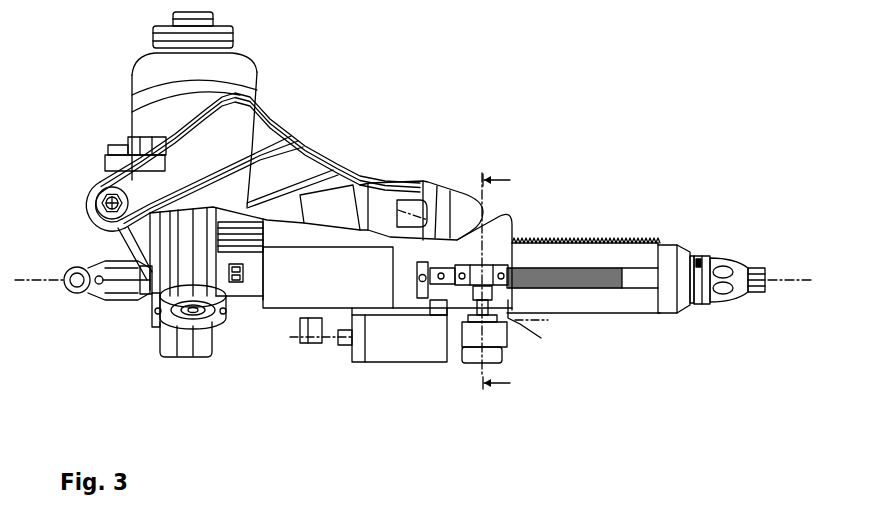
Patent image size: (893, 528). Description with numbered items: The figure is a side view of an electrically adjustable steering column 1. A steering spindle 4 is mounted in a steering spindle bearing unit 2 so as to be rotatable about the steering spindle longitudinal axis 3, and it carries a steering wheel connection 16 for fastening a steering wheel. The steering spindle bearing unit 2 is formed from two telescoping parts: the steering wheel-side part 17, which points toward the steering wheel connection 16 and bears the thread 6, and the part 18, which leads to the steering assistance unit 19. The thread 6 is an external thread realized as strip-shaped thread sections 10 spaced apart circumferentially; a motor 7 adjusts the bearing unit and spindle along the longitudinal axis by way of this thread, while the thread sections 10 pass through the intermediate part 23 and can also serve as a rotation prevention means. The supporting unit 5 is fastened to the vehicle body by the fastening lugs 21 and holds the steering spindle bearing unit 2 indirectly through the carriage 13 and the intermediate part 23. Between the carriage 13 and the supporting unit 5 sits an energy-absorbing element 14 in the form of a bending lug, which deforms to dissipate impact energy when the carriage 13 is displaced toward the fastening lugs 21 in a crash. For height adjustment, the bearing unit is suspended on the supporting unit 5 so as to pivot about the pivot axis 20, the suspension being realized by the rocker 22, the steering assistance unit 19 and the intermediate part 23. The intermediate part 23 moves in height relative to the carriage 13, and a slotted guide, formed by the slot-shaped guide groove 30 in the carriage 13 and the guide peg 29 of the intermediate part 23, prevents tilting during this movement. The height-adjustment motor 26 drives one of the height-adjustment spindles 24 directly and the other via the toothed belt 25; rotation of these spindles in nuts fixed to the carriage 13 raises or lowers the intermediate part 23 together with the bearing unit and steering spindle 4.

The steering column 1 is at (396, 96).
The steering spindle bearing unit 2 is at (640, 256).
The steering spindle longitudinal axis 3 is at (27, 284).
The steering spindle 4 is at (697, 293).
The supporting unit 5 is at (245, 145).
The thread 6 is at (580, 238).
The motor 7 is at (417, 354).
The thread sections 10 is at (582, 288).
The carriage 13 is at (498, 232).
The energy-absorbing element 14 is at (391, 180).
The steering wheel connection 16 is at (750, 294).
The steering wheel-side part 17 is at (630, 305).
The part of the steering spindle bearing unit 18 is at (297, 292).
The steering assistance unit 19 is at (185, 348).
The pivot axis 20 is at (90, 190).
The fastening lugs 21 is at (218, 95).
The rocker 22 is at (122, 245).
The intermediate part 23 is at (543, 338).
The height-adjustment spindles 24 is at (484, 308).
The toothed belt 25 is at (473, 364).
The height-adjustment motor 26 is at (315, 343).
The guide peg 29 is at (448, 298).
The guide groove 30 is at (415, 268).